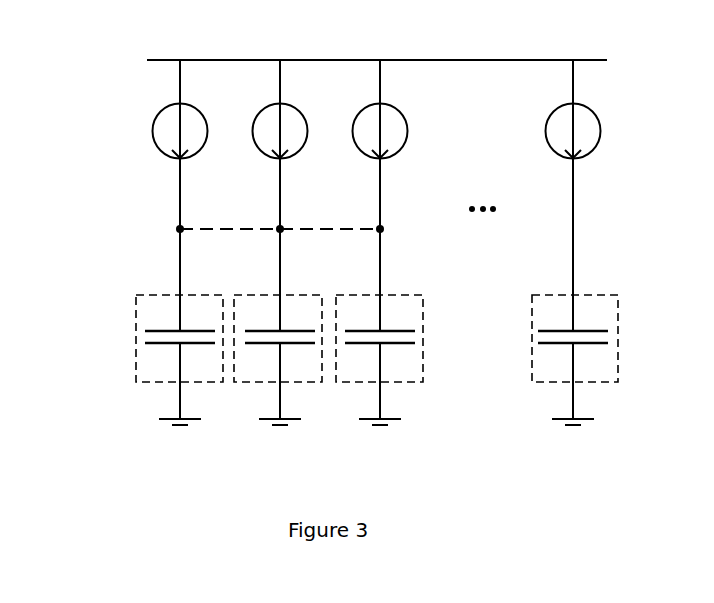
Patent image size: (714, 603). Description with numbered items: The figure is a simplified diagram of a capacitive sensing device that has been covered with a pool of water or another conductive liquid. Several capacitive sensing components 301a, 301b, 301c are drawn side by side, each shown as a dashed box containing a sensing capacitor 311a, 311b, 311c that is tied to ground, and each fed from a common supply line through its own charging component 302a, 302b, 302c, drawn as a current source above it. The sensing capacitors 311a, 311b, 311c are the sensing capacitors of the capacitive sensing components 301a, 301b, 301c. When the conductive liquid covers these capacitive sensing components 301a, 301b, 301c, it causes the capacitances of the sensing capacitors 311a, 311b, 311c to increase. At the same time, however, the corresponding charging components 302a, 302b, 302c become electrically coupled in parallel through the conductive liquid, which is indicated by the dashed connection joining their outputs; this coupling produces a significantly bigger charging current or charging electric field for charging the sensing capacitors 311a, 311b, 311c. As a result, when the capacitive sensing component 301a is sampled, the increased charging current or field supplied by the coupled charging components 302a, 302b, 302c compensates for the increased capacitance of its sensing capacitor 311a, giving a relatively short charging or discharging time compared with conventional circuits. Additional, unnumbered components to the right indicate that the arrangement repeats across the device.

The charging component 302a is at (153, 128).
The charging component 302b is at (297, 110).
The charging component 302c is at (403, 118).
The capacitive sensing component 301a is at (160, 383).
The capacitive sensing component 301b is at (263, 383).
The capacitive sensing component 301c is at (363, 383).
The sensing capacitor 311a is at (160, 330).
The sensing capacitor 311b is at (273, 331).
The sensing capacitor 311c is at (397, 328).